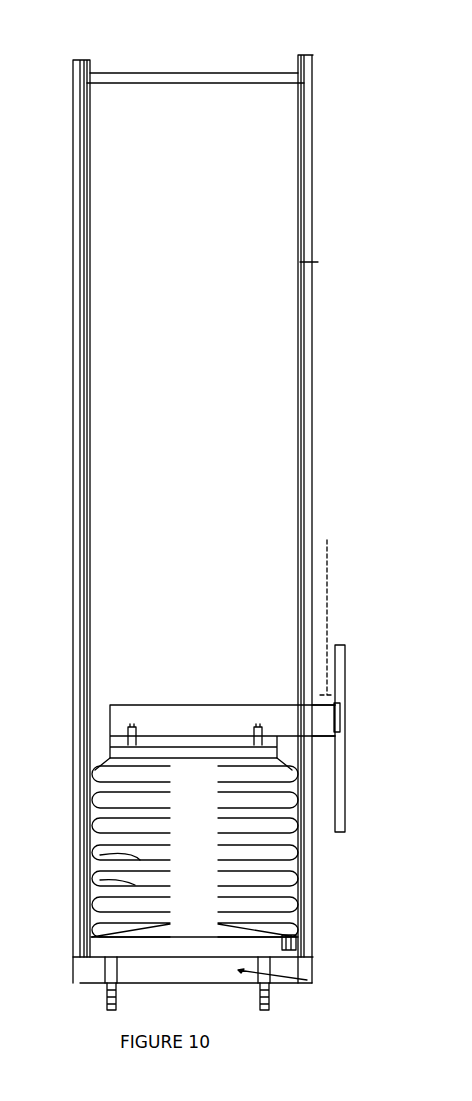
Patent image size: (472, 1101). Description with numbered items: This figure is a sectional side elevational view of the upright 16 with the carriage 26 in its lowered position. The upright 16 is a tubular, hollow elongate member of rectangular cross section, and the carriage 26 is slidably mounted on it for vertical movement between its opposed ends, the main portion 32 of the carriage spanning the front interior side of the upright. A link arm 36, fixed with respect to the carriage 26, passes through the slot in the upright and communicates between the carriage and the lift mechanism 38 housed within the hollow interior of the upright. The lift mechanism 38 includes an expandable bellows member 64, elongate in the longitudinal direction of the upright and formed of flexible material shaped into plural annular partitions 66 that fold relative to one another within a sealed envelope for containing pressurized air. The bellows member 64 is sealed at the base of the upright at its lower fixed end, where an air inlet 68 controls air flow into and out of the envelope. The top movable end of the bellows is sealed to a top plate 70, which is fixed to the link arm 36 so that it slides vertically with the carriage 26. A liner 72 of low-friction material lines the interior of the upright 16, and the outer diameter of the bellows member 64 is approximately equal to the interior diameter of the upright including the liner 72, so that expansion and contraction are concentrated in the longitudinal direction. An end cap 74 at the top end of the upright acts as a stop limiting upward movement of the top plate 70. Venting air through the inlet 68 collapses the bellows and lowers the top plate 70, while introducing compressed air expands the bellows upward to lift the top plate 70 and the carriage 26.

The upright 16 is at (313, 348).
The carriage 26 is at (322, 630).
The main portion of the carriage 32 is at (347, 754).
The link arm 36 is at (195, 712).
The lift mechanism 38 is at (127, 567).
The expandable bellows member 64 is at (126, 815).
The annular partitions 66 is at (193, 943).
The air inlet 68 is at (300, 944).
The top plate 70 is at (185, 757).
The liner 72 is at (92, 392).
The end cap 74 is at (170, 78).